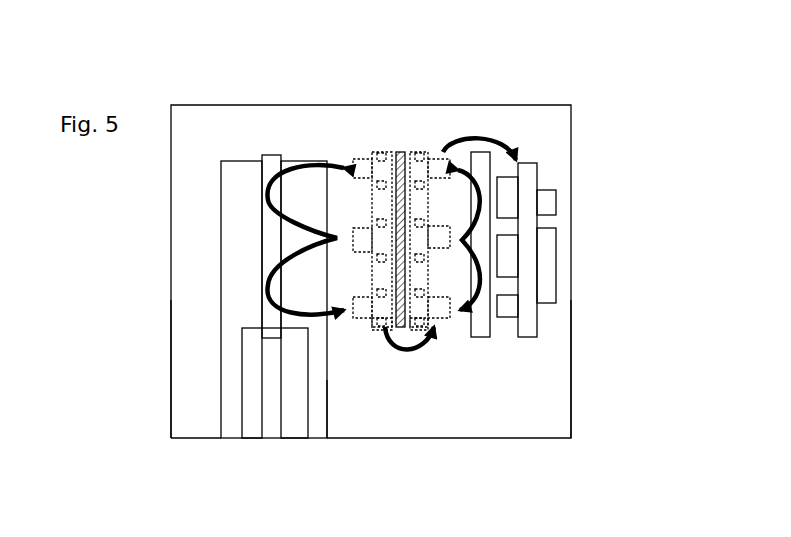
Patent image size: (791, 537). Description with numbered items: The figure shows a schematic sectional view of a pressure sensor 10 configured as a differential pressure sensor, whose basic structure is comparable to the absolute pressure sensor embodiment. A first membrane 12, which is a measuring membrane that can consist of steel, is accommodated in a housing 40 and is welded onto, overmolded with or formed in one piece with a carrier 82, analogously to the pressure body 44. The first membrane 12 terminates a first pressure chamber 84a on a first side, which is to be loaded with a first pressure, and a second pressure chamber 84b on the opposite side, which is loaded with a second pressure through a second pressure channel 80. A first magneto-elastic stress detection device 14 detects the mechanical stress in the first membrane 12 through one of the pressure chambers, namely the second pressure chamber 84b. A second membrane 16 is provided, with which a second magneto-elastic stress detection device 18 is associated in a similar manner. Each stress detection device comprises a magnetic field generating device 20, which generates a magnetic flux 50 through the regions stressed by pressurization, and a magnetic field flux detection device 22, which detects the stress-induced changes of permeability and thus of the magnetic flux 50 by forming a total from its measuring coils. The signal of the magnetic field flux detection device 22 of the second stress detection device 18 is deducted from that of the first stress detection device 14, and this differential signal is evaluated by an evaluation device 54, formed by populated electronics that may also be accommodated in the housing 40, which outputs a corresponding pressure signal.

The pressure sensor 10 is at (590, 457).
The first membrane 12 is at (272, 170).
The first magneto-elastic stress detection device 14 is at (379, 336).
The second membrane 16 is at (482, 335).
The second magneto-elastic stress detection device 18 is at (449, 334).
The magnetic field generating device 20 is at (361, 225).
The magnetic field flux detection device 22 is at (383, 323).
The housing 40 is at (543, 112).
The pressure body 44 is at (228, 382).
The magnetic flux 50 is at (273, 282).
The evaluation device 54 is at (558, 254).
The second pressure channel 80 is at (322, 408).
The carrier 82 is at (275, 418).
The first pressure chamber 84a is at (245, 220).
The second pressure chamber 84b is at (302, 165).